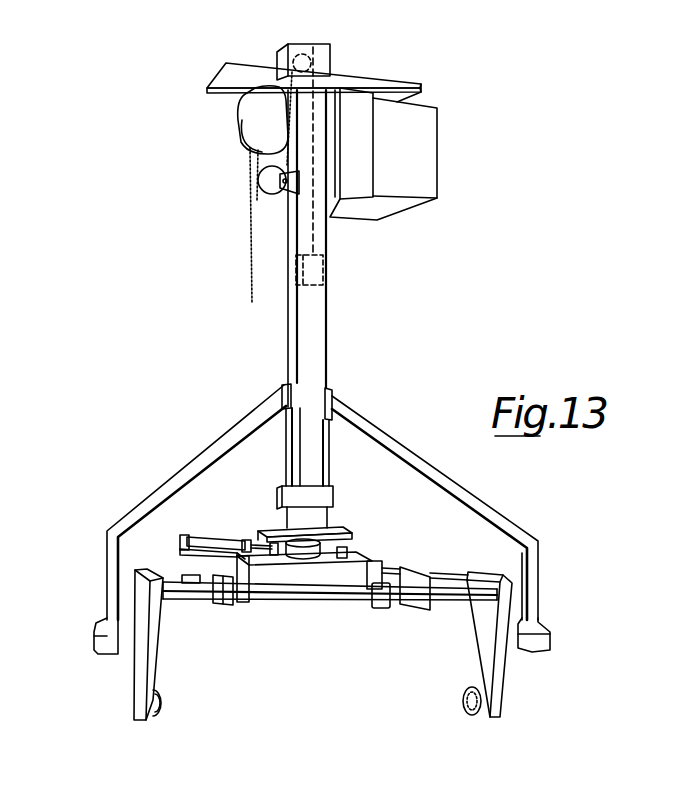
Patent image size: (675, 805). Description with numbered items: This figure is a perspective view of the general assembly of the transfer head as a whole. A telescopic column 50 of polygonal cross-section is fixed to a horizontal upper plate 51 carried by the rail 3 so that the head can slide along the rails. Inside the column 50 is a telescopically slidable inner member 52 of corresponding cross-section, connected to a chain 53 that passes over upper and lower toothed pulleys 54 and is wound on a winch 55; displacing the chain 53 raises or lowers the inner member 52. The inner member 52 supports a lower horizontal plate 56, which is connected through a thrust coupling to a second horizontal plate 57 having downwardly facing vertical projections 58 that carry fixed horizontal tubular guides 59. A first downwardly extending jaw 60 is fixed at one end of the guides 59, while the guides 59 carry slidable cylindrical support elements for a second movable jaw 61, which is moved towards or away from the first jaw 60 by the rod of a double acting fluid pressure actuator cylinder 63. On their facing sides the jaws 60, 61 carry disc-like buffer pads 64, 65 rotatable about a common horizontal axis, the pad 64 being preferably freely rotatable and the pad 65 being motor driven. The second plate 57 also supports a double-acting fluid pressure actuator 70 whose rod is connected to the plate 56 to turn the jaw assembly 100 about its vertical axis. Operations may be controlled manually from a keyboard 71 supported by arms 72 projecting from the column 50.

The rail 3 is at (420, 165).
The telescopic column 50 is at (327, 345).
The horizontal upper plate 51 is at (402, 83).
The inner member 52 is at (335, 515).
The chain 53 is at (315, 224).
The toothed pulley 54 is at (310, 60).
The winch 55 is at (262, 120).
The lower horizontal plate 56 is at (345, 531).
The second horizontal plate 57 is at (335, 558).
The vertical projection 58 is at (382, 605).
The horizontal tubular guide 59 is at (270, 596).
The first jaw 60 is at (140, 655).
The second movable jaw 61 is at (500, 662).
The double acting fluid pressure actuator cylinder 63 is at (397, 586).
The buffer pad 64 is at (168, 706).
The buffer pad 65 is at (463, 697).
The double-acting fluid pressure actuator 70 is at (212, 540).
The keyboard 71 is at (96, 622).
The arm 72 is at (183, 480).
The jaw assembly 100 is at (227, 646).